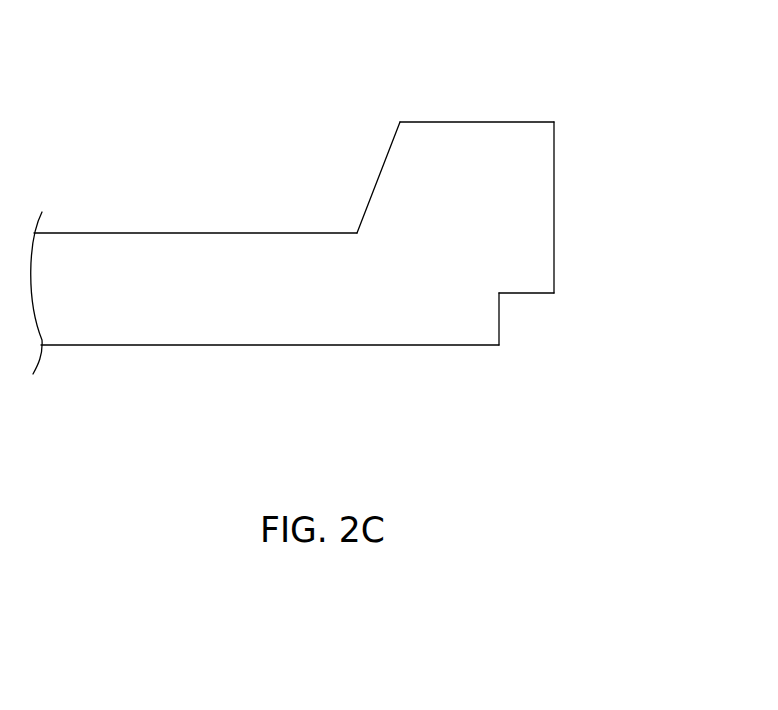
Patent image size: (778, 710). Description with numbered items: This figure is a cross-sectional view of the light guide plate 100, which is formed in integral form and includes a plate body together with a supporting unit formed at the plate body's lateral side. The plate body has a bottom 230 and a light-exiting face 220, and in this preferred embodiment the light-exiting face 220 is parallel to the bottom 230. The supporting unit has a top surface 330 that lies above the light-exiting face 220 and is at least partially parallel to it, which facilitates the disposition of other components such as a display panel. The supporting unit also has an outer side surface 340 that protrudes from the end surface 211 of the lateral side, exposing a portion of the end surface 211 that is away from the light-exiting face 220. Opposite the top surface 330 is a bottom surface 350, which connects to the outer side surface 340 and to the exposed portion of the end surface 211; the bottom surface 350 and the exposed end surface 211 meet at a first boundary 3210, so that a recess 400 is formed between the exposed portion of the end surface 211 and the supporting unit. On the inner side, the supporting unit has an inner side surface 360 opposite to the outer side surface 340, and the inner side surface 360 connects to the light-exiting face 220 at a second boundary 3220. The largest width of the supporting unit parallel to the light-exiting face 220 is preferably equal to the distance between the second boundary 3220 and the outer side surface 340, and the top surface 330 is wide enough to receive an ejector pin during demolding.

The light guide plate 100 is at (141, 49).
The light-exiting face 220 is at (229, 233).
The bottom 230 is at (103, 347).
The inner side surface 360 is at (378, 172).
The second boundary 3220 is at (356, 231).
The top surface 330 is at (492, 122).
The outer side surface 340 is at (554, 178).
The first boundary 3210 is at (502, 291).
The bottom surface 350 is at (533, 295).
The end surface 211 is at (499, 327).
The recess 400 is at (530, 324).